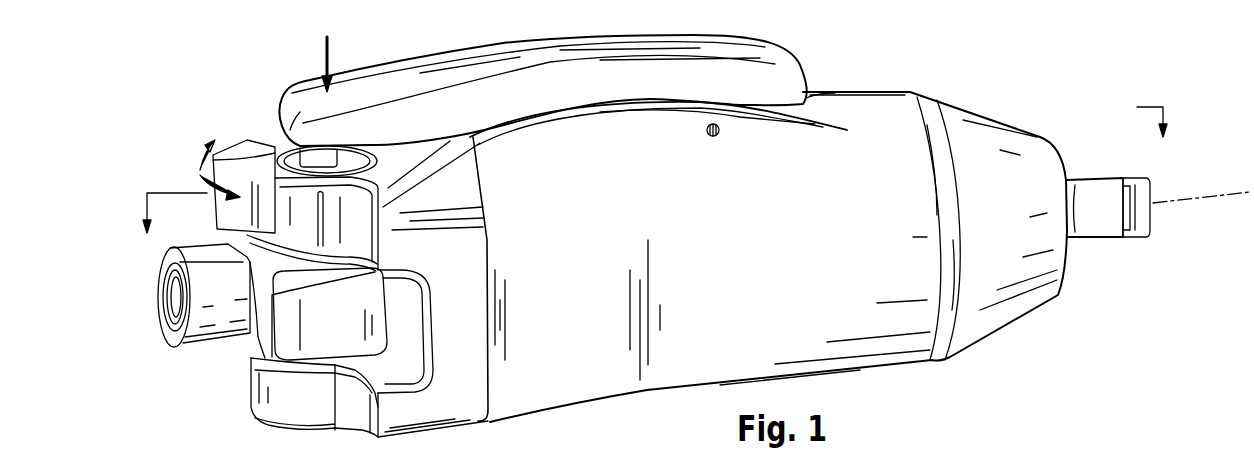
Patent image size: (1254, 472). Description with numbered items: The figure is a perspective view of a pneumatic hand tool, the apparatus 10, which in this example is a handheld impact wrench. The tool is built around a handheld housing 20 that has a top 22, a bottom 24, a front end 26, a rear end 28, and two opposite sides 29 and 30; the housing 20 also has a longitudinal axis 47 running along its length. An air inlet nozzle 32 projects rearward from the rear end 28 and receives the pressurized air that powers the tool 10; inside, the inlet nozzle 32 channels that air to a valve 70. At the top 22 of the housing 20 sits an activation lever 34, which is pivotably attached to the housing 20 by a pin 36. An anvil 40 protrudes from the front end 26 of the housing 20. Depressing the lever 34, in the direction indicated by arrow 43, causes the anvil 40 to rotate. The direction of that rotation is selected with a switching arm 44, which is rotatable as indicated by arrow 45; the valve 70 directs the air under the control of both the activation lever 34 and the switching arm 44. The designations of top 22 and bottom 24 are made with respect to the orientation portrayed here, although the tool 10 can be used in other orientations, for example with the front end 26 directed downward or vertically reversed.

The apparatus 10 is at (995, 75).
The handheld housing 20 is at (863, 91).
The top 22 is at (840, 91).
The bottom 24 is at (843, 372).
The front end 26 is at (1070, 267).
The rear end 28 is at (250, 390).
The side 29 is at (823, 91).
The side 30 is at (683, 337).
The air inlet nozzle 32 is at (640, 393).
The activation lever 34 is at (353, 72).
The pin 36 is at (717, 137).
The anvil 40 is at (1097, 180).
The arrow 43 is at (323, 50).
The switching arm 44 is at (243, 153).
The arrow 45 is at (193, 173).
The longitudinal axis 47 is at (1210, 192).
The valve 70 is at (243, 100).